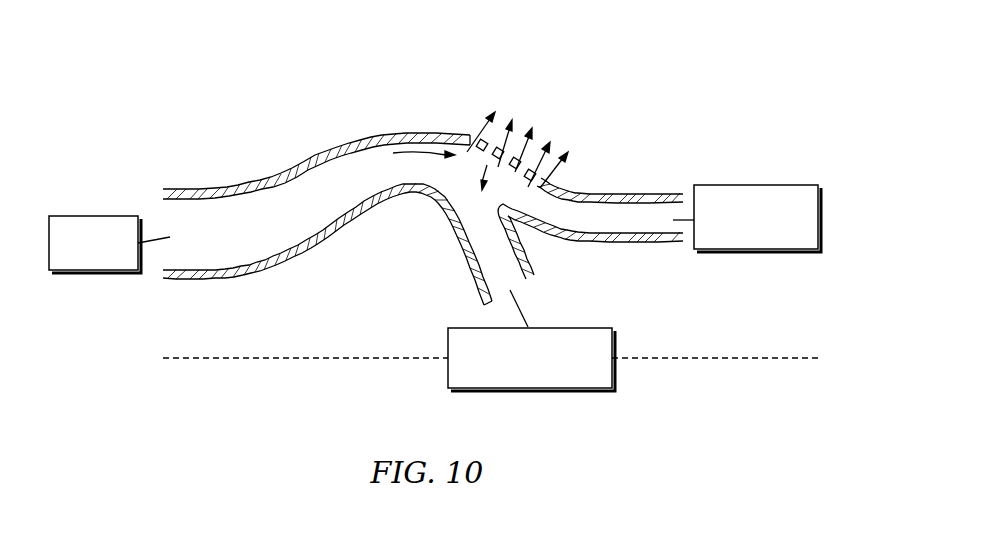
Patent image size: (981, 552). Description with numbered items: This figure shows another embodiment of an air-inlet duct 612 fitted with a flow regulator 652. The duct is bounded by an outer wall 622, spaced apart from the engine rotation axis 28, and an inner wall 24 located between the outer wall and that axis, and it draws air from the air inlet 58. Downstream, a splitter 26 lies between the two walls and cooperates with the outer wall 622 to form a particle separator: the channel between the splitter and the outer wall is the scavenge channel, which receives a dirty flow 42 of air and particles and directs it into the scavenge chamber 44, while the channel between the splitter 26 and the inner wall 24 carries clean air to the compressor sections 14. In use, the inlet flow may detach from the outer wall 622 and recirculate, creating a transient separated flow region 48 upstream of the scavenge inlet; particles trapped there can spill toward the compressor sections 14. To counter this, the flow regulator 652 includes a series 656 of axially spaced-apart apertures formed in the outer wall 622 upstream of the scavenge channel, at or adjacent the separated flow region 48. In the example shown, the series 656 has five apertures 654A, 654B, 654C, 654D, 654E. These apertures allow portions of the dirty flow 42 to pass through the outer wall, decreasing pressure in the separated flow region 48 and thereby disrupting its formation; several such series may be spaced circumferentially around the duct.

The compressor sections 14 is at (532, 388).
The inner wall 24 is at (278, 253).
The splitter 26 is at (534, 247).
The engine rotation axis 28 is at (233, 360).
The dirty flow 42 is at (423, 152).
The scavenge chamber 44 is at (758, 252).
The separated flow region 48 is at (490, 166).
The air inlet 58 is at (95, 270).
The air-inlet duct 612 is at (665, 100).
The outer wall 622 is at (208, 190).
The flow regulator 652 is at (561, 90).
The aperture 654A is at (470, 147).
The aperture 654B is at (497, 190).
The aperture 654C is at (497, 190).
The aperture 654D is at (530, 166).
The aperture 654E is at (568, 152).
The series of spaced-apart apertures 656 is at (447, 115).